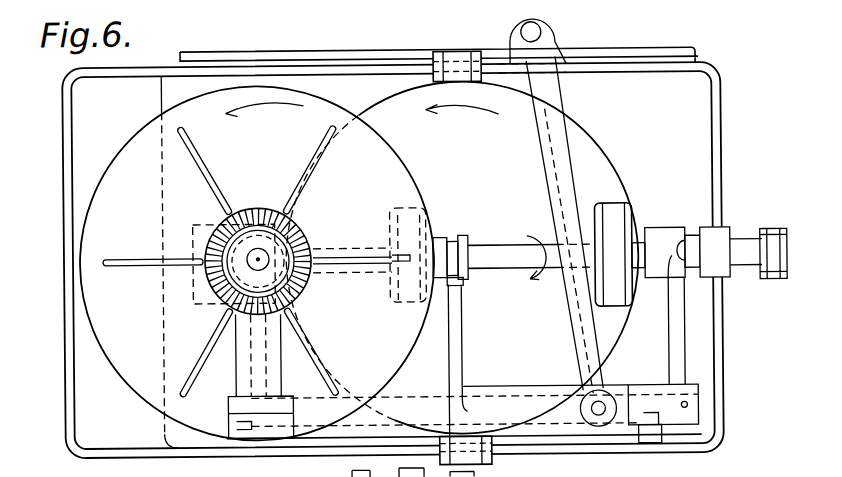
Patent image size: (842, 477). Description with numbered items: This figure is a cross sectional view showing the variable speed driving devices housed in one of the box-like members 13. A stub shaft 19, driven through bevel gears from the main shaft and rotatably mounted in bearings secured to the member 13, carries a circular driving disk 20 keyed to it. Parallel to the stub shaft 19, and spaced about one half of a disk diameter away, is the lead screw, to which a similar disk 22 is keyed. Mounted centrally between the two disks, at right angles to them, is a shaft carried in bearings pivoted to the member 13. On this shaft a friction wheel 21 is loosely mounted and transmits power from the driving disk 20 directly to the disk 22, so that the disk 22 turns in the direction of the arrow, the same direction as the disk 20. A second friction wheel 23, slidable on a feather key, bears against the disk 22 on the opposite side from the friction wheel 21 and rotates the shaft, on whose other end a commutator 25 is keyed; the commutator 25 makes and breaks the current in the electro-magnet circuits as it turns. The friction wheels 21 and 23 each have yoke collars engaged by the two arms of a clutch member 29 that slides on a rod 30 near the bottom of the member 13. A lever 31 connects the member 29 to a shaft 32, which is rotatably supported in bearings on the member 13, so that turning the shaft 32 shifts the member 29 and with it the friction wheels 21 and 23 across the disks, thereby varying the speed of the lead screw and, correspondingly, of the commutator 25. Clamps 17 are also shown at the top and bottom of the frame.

The box-like member 13 is at (64, 228).
The clamps 17 is at (450, 50).
The stub shaft 19 is at (268, 252).
The circular driving disk 20 is at (143, 140).
The friction wheel 21 is at (437, 203).
The disk 22 is at (598, 160).
The second friction wheel 23 is at (617, 217).
The commutator 25 is at (192, 282).
The member 29 is at (455, 312).
The rod 30 is at (407, 407).
The lever 31 is at (540, 88).
The shaft 32 is at (540, 33).